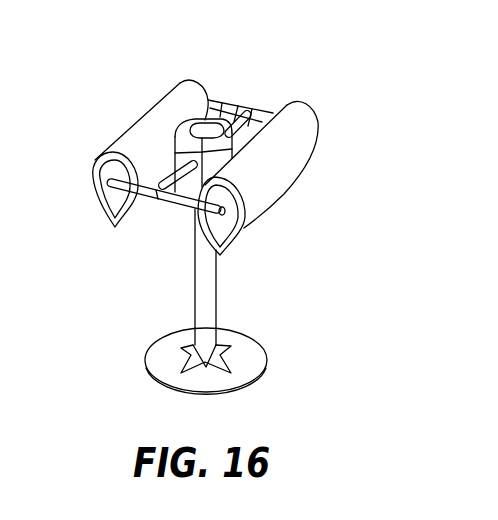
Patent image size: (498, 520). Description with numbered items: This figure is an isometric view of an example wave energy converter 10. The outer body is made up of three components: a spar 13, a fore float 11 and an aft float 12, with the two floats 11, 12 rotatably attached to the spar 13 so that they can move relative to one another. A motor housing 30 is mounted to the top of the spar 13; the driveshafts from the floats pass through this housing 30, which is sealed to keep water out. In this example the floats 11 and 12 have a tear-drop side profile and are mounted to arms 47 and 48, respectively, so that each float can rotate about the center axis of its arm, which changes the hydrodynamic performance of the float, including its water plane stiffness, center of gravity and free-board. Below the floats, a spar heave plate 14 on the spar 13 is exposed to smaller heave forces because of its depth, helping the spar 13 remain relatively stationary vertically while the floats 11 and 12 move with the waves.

The wave energy converter 10 is at (268, 78).
The fore float 11 is at (150, 125).
The aft float 12 is at (300, 120).
The spar 13 is at (210, 302).
The spar heave plate 14 is at (255, 353).
The motor housing 30 is at (228, 117).
The arm 47 is at (148, 195).
The arm 48 is at (180, 200).